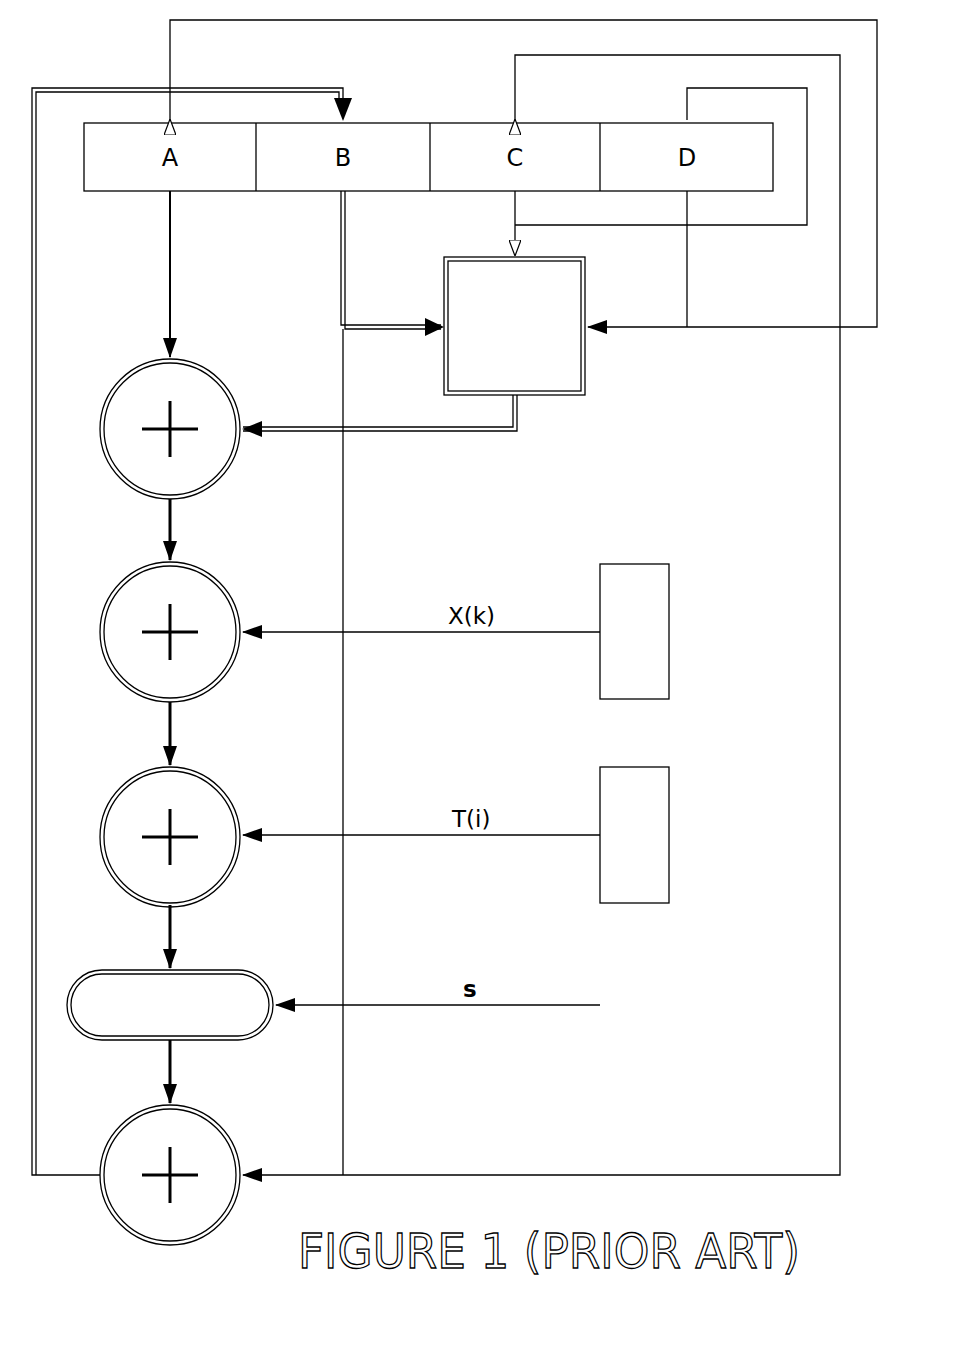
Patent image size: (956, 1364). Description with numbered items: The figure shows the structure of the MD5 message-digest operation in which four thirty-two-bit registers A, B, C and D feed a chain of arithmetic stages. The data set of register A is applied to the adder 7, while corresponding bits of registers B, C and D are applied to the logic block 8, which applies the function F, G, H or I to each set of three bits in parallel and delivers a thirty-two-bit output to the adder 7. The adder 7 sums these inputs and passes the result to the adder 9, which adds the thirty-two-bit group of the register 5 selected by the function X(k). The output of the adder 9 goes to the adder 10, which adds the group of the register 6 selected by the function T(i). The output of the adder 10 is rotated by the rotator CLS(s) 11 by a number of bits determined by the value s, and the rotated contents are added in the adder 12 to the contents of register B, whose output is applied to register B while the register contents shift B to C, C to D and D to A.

The register 5 is at (634, 631).
The register 6 is at (634, 835).
The adder 7 is at (196, 364).
The logic block 8 is at (514, 326).
The adder 9 is at (196, 567).
The adder 10 is at (216, 756).
The rotator CLS(s) 11 is at (216, 954).
The adder 12 is at (216, 1094).